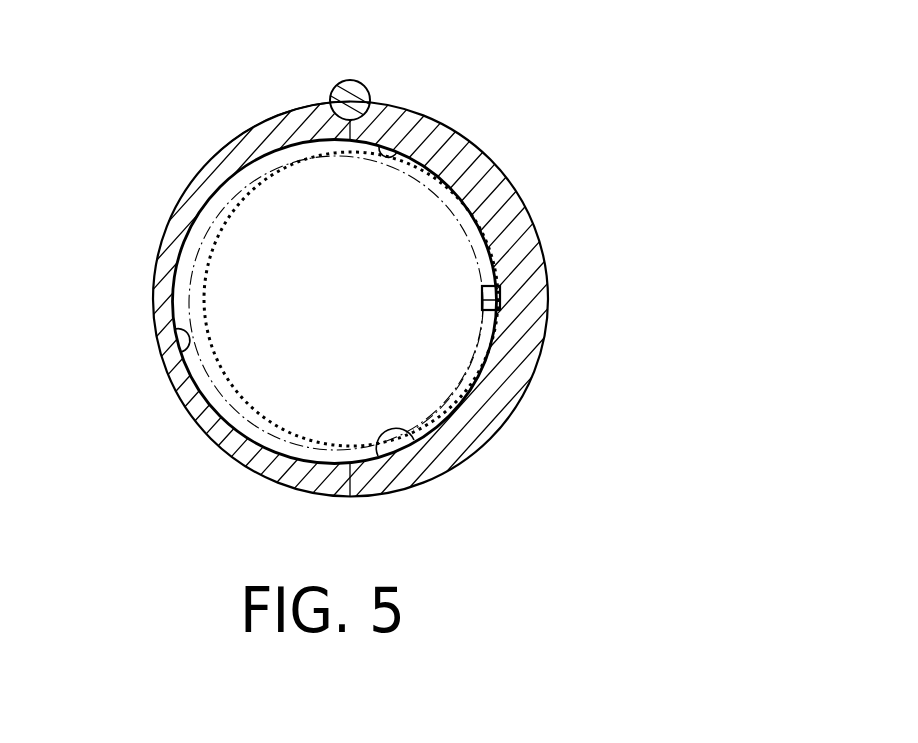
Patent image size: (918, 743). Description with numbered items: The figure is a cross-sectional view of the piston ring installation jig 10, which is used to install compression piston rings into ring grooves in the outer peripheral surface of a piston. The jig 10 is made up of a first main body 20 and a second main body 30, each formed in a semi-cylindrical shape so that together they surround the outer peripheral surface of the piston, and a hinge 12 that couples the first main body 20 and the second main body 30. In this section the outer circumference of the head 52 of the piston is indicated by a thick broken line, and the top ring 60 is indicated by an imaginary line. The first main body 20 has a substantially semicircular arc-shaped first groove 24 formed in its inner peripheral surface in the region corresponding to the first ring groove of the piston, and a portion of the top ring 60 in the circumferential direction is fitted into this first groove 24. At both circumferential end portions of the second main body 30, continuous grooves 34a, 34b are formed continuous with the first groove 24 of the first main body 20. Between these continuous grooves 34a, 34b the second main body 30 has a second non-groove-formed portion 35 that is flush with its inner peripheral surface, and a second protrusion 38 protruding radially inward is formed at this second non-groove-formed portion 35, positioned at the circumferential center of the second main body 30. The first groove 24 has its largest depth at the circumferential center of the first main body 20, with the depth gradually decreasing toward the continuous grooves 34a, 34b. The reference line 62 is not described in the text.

The piston ring installation jig 10 is at (526, 75).
The hinge 12 is at (350, 80).
The first main body 20 is at (212, 158).
The first groove 24 is at (163, 362).
The second main body 30 is at (477, 147).
The continuous groove 34a is at (391, 146).
The continuous groove 34b is at (413, 430).
The second non-groove-formed portion 35 is at (483, 288).
The second protrusion 38 is at (482, 302).
The head 52 is at (188, 265).
The top ring 60 is at (440, 197).
The reference arc 62 is at (480, 312).